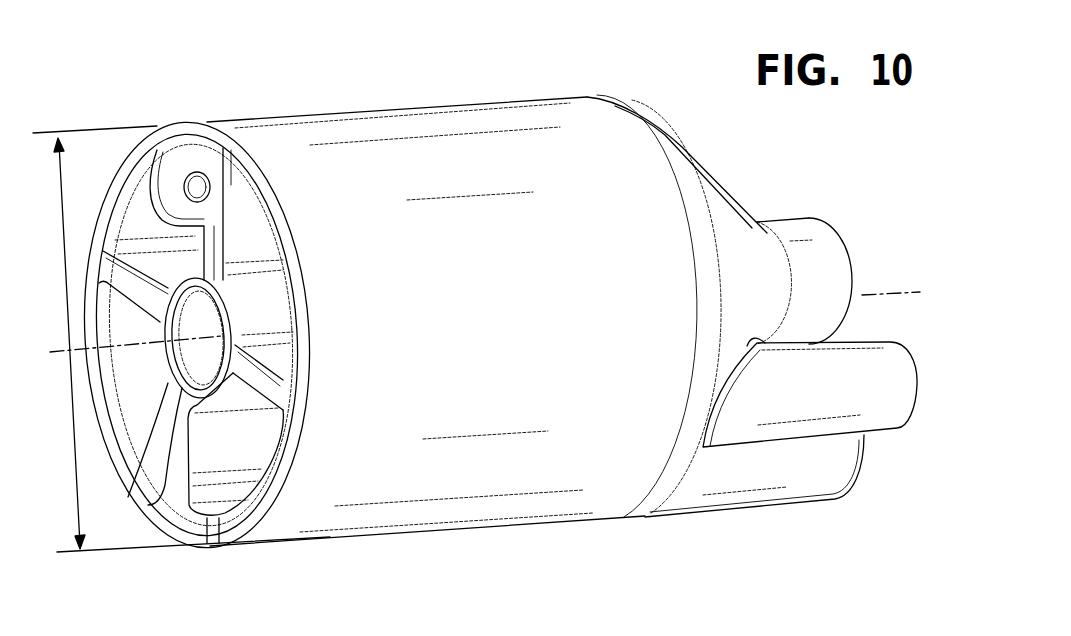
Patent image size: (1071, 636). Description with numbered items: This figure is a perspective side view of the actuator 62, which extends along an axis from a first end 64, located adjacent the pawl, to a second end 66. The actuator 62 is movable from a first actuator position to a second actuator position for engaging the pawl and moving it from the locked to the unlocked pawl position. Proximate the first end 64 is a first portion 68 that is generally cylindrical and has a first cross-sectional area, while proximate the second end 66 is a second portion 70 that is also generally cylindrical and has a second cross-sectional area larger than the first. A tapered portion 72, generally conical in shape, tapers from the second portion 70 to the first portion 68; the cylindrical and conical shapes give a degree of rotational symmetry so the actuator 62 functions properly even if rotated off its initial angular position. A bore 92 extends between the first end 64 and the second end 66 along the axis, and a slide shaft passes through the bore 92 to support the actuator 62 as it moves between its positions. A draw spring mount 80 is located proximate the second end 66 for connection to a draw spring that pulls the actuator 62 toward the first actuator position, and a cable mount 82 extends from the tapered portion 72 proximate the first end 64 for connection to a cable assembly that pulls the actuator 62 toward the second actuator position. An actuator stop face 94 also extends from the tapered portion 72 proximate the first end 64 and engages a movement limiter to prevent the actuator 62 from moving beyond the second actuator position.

The actuator 62 is at (170, 82).
The first end 64 is at (845, 252).
The second end 66 is at (313, 370).
The first portion 68 is at (781, 221).
The second portion 70 is at (322, 543).
The tapered portion 72 is at (720, 183).
The draw spring mount 80 is at (192, 188).
The cable mount 82 is at (863, 463).
The bore 92 is at (200, 373).
The actuator stop face 94 is at (917, 383).